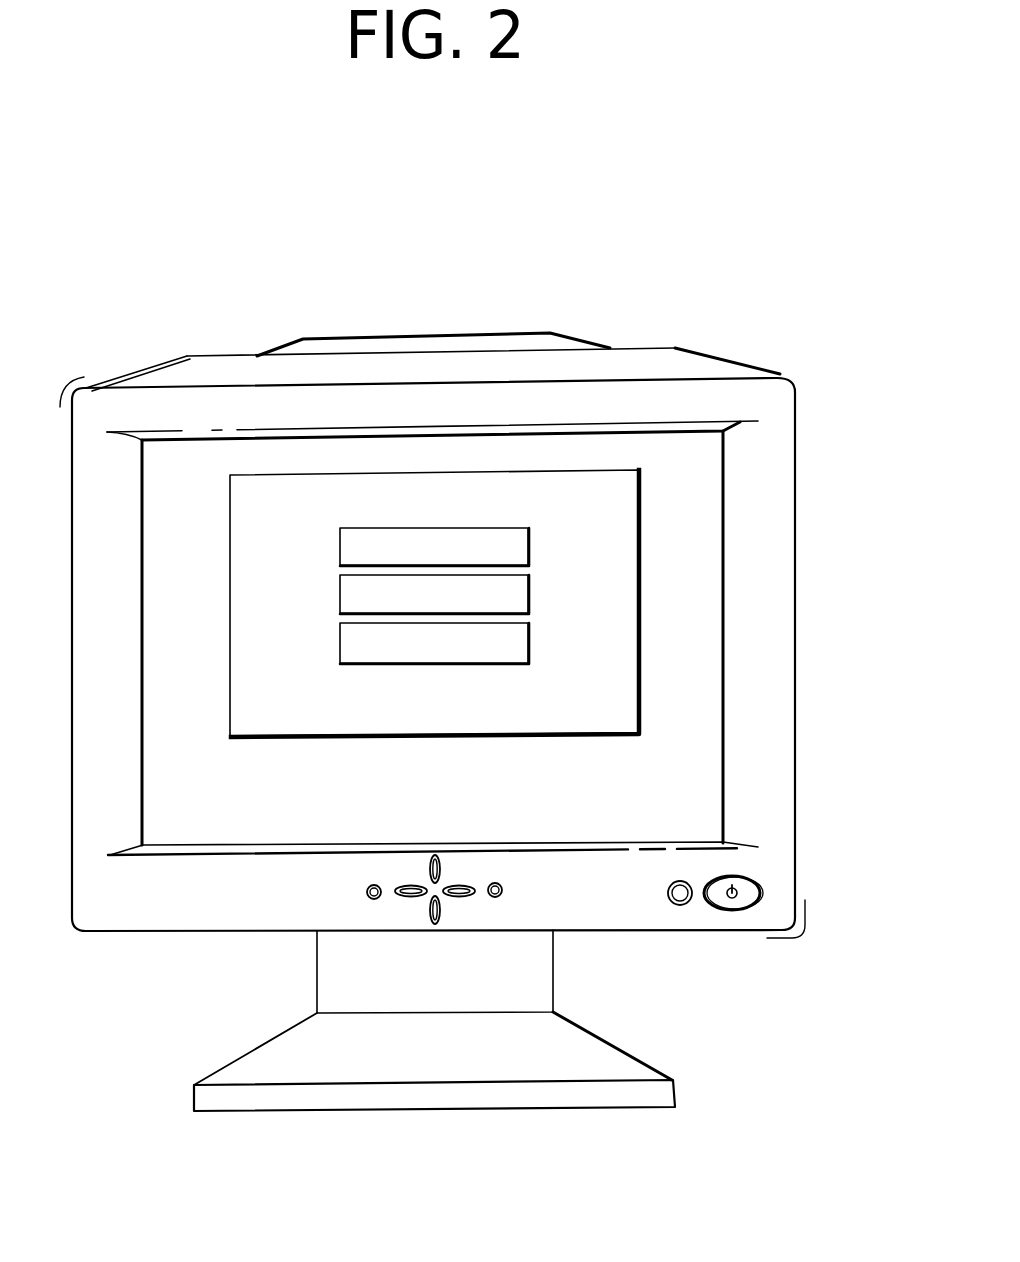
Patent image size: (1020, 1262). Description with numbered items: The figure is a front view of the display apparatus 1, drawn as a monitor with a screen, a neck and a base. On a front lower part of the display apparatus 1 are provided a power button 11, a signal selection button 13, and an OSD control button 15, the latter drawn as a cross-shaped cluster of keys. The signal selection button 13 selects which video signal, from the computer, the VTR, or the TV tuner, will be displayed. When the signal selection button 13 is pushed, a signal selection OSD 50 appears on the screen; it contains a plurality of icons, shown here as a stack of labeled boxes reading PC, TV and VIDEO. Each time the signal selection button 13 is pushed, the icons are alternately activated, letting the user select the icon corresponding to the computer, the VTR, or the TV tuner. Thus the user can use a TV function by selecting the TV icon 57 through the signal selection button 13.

The display apparatus 1 is at (848, 233).
The power button 11 is at (748, 895).
The signal selection button 13 is at (682, 897).
The OSD control button 15 is at (441, 917).
The signal selection OSD 50 is at (623, 683).
The TV icon 57 is at (517, 597).